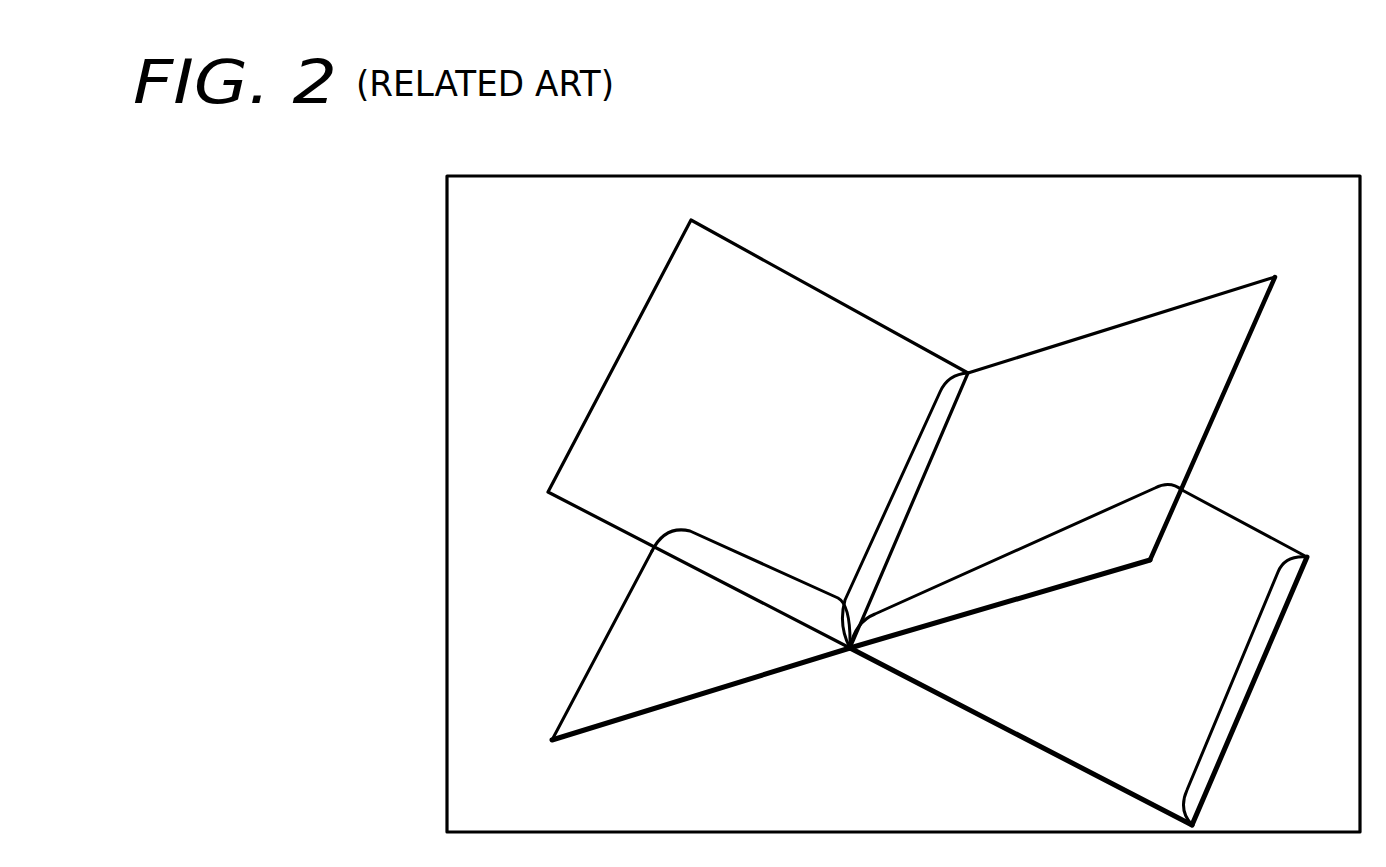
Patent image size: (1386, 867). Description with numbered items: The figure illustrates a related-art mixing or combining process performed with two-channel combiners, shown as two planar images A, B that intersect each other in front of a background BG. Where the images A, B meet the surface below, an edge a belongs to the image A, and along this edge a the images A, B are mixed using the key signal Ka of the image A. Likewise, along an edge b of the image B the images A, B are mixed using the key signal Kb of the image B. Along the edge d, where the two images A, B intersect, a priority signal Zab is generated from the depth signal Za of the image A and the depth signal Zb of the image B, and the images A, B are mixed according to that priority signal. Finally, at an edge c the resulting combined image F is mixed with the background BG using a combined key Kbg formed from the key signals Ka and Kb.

The image A is at (795, 277).
The image B is at (1137, 320).
The edge a is at (768, 570).
The edge b is at (1028, 546).
The edge c is at (1233, 678).
The edge d is at (894, 492).
The background BG is at (903, 504).